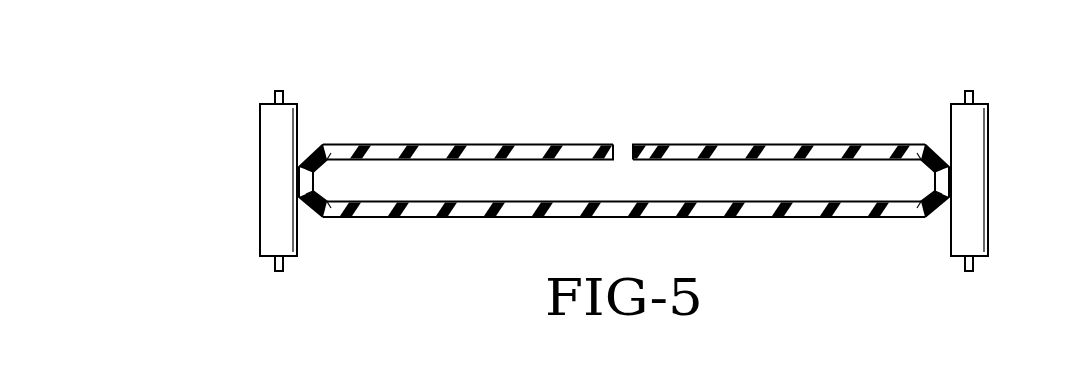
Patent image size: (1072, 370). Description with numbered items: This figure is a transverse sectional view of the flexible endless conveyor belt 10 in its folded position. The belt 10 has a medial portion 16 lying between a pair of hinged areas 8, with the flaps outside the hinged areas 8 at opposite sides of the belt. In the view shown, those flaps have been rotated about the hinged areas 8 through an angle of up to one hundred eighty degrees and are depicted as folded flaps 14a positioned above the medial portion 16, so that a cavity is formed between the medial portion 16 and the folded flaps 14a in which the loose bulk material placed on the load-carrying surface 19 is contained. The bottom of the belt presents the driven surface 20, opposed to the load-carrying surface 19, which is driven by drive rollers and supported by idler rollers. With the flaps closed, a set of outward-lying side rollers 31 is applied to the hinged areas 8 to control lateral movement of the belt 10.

The flexible endless conveyor belt 10 is at (625, 175).
The folded flaps 14a is at (440, 137).
The medial portion 16 is at (467, 229).
The load-carrying surface 19 is at (632, 200).
The driven surface 20 is at (761, 218).
The side rollers 31 is at (268, 136).
The hinged areas 8 is at (284, 197).